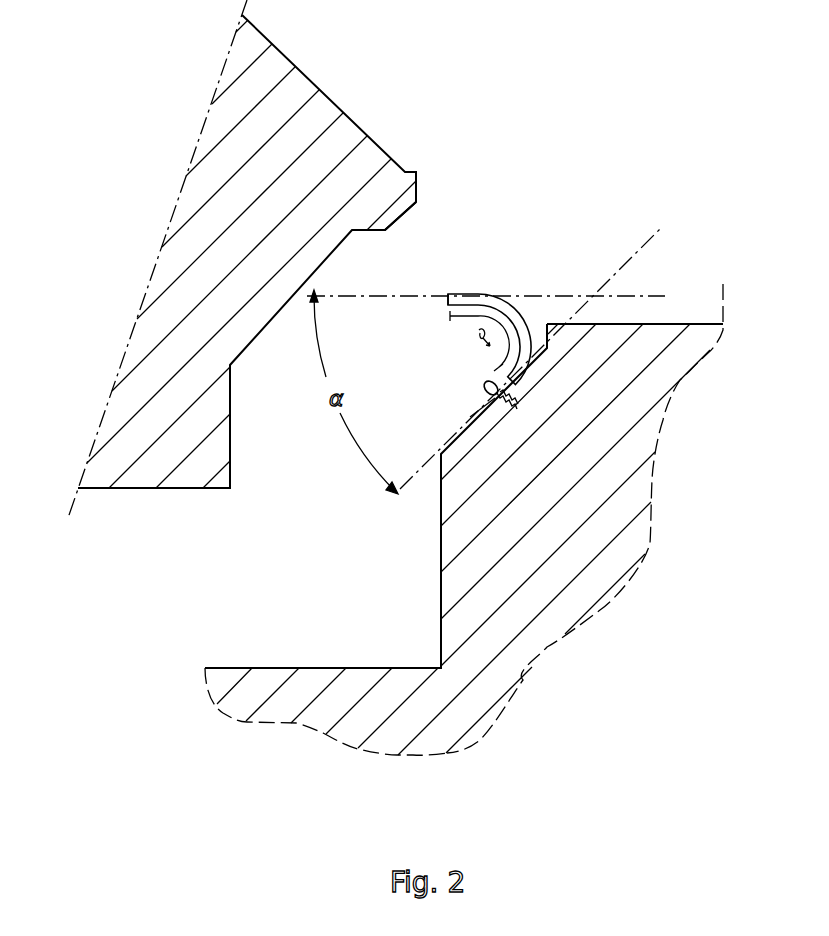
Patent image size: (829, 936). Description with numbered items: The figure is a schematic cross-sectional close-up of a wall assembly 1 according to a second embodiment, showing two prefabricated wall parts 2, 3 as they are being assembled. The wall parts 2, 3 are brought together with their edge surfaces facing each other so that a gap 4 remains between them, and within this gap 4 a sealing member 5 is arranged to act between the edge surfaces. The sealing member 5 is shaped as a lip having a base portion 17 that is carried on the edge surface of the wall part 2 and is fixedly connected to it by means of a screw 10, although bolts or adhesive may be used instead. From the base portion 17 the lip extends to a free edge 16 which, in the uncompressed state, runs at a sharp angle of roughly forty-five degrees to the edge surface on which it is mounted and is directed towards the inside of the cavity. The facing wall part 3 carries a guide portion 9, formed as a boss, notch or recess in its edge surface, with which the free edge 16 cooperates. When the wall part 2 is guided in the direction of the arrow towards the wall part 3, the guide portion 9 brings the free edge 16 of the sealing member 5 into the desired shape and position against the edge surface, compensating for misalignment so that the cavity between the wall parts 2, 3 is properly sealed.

The wall assembly 1 is at (576, 710).
The wall part 2 is at (593, 538).
The wall part 3 is at (230, 198).
The gap 4 is at (334, 576).
The sealing member 5 is at (488, 302).
The guide portion 9 is at (367, 240).
The screw 10 is at (487, 385).
The free edge 16 is at (455, 298).
The base portion 17 is at (486, 393).